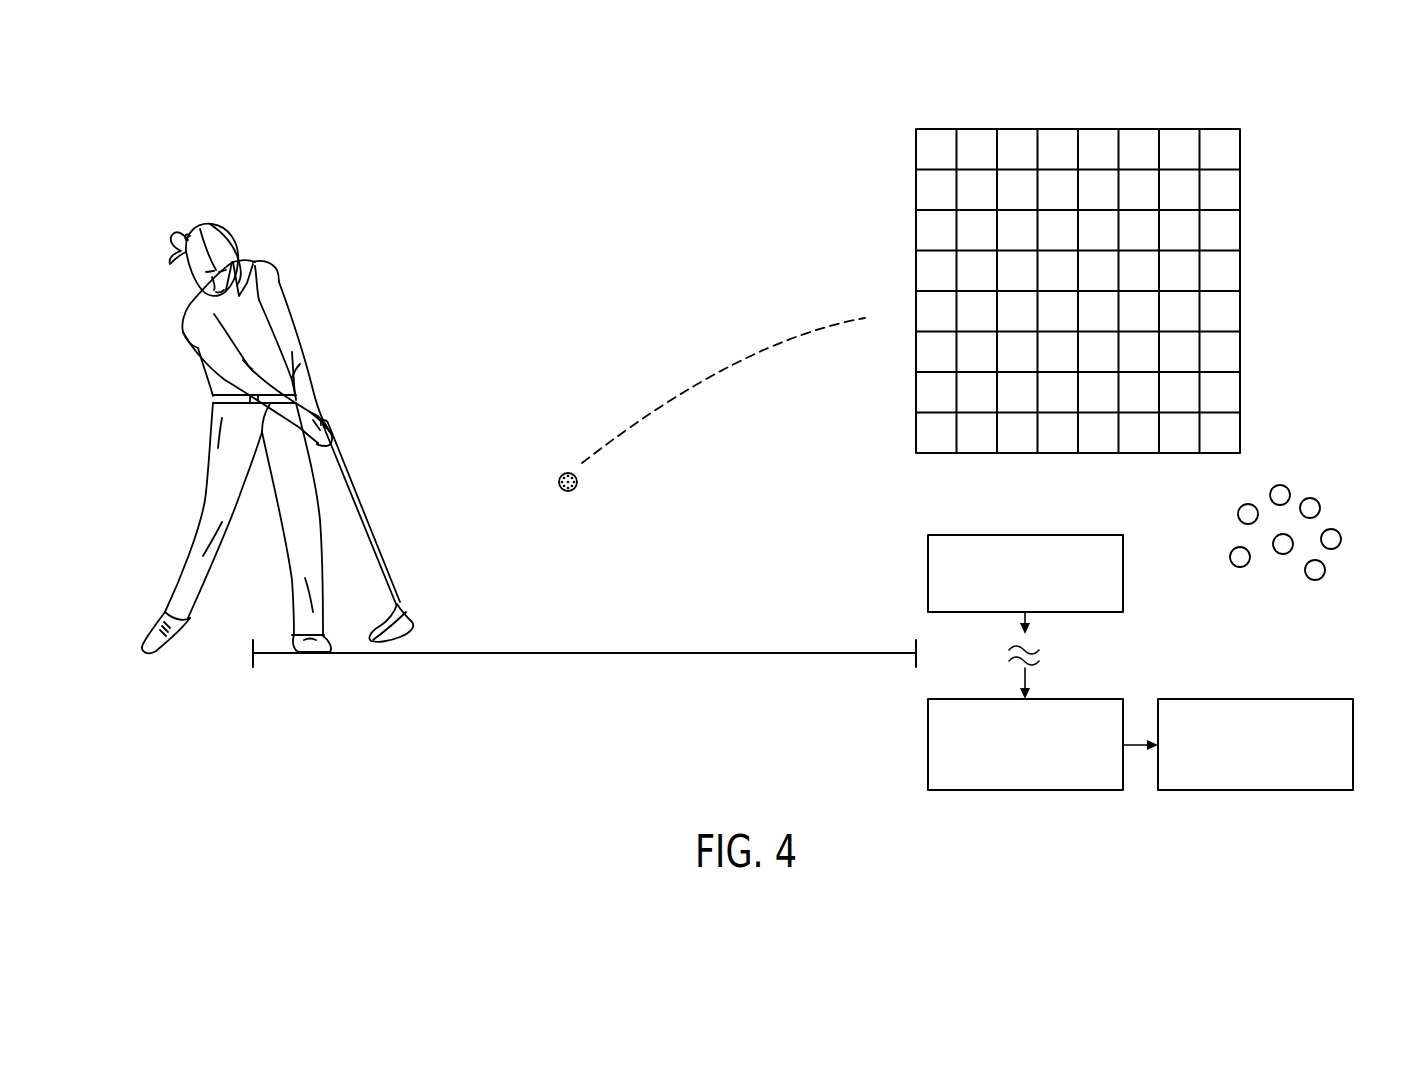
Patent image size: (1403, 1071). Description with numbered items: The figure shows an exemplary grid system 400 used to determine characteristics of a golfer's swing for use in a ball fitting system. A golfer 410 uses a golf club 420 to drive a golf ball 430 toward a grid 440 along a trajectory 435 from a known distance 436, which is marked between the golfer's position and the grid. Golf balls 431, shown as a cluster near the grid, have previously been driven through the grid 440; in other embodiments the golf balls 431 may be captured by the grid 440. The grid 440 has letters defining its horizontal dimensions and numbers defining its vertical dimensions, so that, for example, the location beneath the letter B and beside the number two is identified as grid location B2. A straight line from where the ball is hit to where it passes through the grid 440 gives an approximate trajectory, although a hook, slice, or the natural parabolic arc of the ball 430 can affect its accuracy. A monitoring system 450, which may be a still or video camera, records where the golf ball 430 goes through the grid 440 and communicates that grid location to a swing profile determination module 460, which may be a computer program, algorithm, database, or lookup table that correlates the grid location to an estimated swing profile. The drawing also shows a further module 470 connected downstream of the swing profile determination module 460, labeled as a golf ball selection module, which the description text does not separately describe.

The grid system 400 is at (316, 132).
The golfer 410 is at (249, 258).
The golf club 420 is at (370, 530).
The golf ball 430 is at (566, 471).
The golf balls 431 is at (1342, 579).
The trajectory 435 is at (774, 342).
The known distance 436 is at (678, 651).
The grid 440 is at (990, 129).
The monitoring system 450 is at (989, 535).
The swing profile determination module 460 is at (1080, 791).
The golf ball selection module 470 is at (1195, 699).